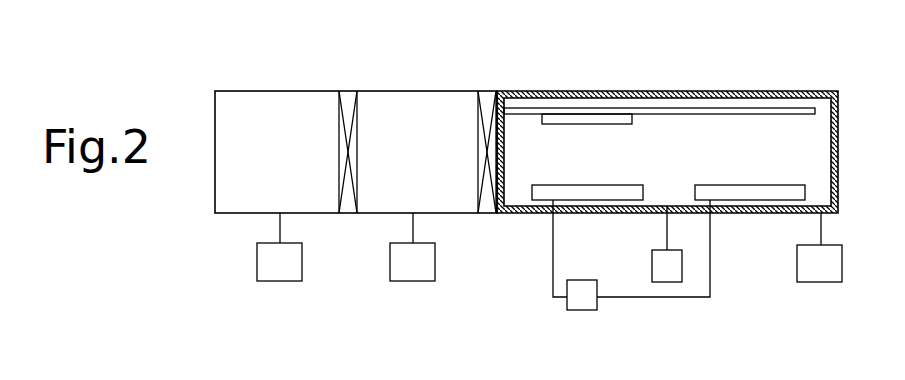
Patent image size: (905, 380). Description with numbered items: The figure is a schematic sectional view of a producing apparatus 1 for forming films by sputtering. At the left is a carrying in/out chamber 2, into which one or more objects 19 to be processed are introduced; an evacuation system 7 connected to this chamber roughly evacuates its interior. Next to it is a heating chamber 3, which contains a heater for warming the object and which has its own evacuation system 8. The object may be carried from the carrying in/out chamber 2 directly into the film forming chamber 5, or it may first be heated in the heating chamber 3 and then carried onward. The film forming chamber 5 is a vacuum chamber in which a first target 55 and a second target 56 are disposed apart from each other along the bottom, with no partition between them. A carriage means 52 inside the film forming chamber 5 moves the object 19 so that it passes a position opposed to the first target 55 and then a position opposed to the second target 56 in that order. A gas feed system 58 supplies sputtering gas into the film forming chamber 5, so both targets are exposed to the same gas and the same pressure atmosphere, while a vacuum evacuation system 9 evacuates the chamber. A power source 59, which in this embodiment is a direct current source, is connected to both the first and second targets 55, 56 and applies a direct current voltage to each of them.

The producing apparatus 1 is at (199, 43).
The carrying in/out chamber 2 is at (307, 97).
The heating chamber 3 is at (411, 97).
The film forming chamber 5 is at (822, 91).
The evacuation system 7 is at (278, 283).
The evacuation system 8 is at (406, 283).
The vacuum evacuation system 9 is at (829, 283).
The object to be processed 19 is at (570, 118).
The carriage means 52 is at (663, 112).
The first target 55 is at (585, 200).
The second target 56 is at (747, 200).
The gas feed system 58 is at (665, 275).
The power source 59 is at (588, 312).